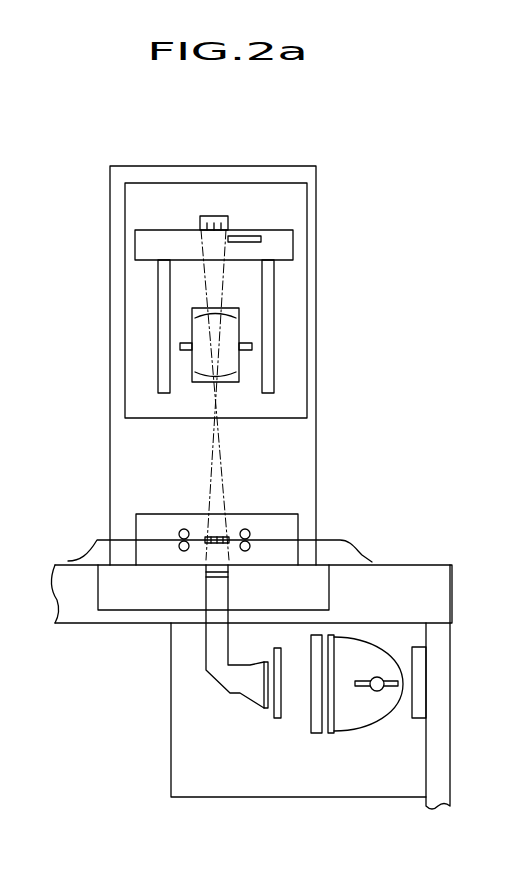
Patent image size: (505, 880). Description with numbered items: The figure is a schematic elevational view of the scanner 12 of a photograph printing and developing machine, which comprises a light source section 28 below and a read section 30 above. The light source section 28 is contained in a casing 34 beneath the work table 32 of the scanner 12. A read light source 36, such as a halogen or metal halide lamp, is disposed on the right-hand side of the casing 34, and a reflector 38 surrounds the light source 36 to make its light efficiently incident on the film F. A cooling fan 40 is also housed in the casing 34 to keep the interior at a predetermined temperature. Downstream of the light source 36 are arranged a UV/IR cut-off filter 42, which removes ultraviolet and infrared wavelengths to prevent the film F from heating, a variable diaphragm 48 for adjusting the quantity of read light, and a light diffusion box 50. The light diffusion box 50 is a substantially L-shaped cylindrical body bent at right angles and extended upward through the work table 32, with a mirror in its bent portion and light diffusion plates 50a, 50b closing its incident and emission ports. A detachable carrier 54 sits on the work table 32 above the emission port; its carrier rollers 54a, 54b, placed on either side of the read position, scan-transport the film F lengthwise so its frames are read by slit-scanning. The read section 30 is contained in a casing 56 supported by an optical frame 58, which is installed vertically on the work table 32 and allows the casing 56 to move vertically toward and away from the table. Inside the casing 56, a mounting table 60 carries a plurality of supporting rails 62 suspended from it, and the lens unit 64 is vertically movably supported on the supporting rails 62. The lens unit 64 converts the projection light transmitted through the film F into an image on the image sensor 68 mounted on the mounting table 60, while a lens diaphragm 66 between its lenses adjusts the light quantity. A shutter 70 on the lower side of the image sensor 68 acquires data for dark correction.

The scanner 12 is at (356, 148).
The light source section 28 is at (189, 754).
The read section 30 is at (138, 390).
The work table 32 is at (425, 563).
The casing 34 is at (182, 798).
The read light source 36 is at (376, 691).
The reflector 38 is at (358, 732).
The cooling fan 40 is at (424, 718).
The UV/IR cut-off filter 42 is at (317, 733).
The variable diaphragm 48 is at (277, 718).
The light diffusion box 50 is at (218, 688).
The light diffusion plate 50a is at (265, 708).
The light diffusion plate 50b is at (206, 575).
The carrier 54 is at (298, 514).
The carrier roller 54a is at (181, 529).
The carrier roller 54b is at (247, 551).
The casing 56 is at (307, 323).
The optical frame 58 is at (316, 380).
The mounting table 60 is at (135, 242).
The supporting rails 62 is at (158, 280).
The lens unit 64 is at (238, 378).
The lens diaphragm 66 is at (180, 346).
The image sensor 68 is at (220, 215).
The shutter 70 is at (262, 238).
The film F is at (90, 547).